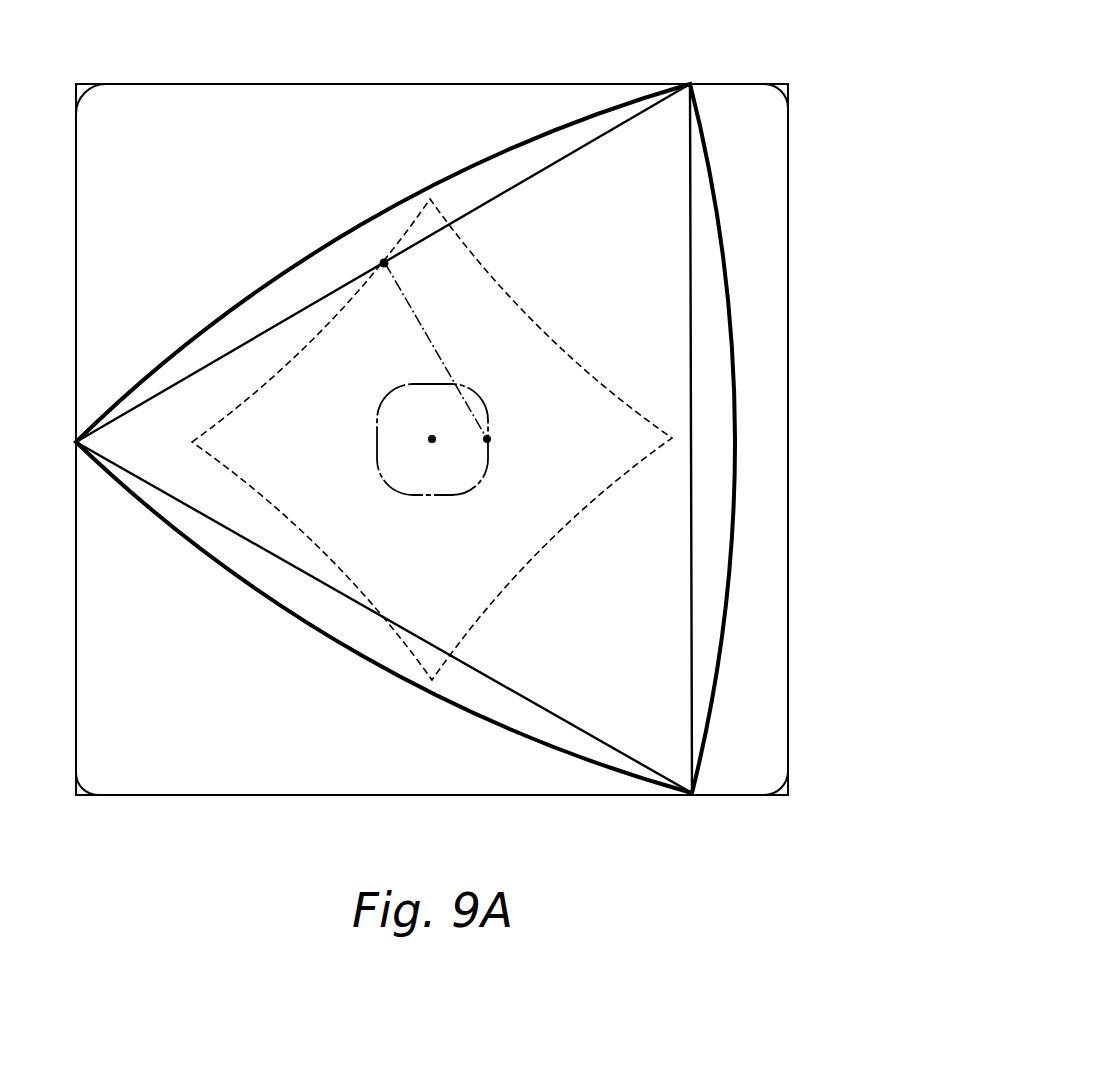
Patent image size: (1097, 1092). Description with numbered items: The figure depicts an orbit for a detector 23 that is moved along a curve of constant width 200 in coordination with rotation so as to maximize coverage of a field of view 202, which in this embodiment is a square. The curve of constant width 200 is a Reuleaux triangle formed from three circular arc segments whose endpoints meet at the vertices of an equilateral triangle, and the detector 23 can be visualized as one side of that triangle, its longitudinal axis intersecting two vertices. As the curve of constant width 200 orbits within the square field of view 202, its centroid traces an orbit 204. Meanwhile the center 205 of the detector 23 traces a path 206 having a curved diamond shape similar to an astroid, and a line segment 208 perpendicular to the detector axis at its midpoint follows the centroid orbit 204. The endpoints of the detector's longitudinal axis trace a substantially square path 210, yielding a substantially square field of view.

The field of view 202 is at (788, 90).
The substantially square path 210 is at (83, 787).
The curve of constant width 200 is at (232, 308).
The detector 23 is at (535, 175).
The path 206 is at (300, 533).
The orbit of the centroid 204 is at (450, 496).
The line segment 208 is at (432, 344).
The center of the detector 205 is at (381, 263).